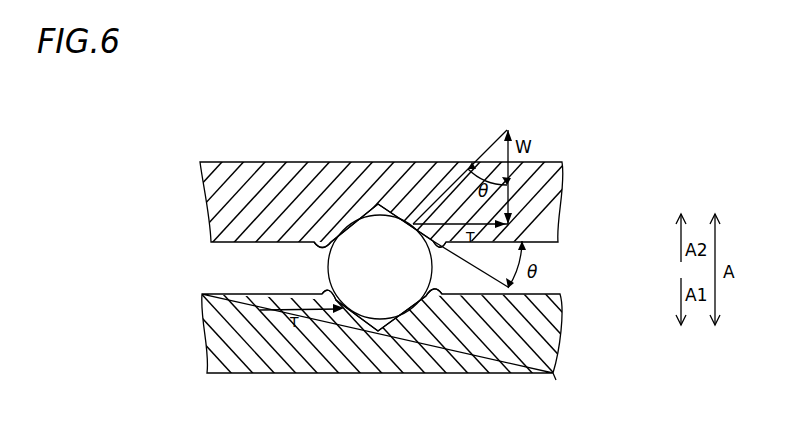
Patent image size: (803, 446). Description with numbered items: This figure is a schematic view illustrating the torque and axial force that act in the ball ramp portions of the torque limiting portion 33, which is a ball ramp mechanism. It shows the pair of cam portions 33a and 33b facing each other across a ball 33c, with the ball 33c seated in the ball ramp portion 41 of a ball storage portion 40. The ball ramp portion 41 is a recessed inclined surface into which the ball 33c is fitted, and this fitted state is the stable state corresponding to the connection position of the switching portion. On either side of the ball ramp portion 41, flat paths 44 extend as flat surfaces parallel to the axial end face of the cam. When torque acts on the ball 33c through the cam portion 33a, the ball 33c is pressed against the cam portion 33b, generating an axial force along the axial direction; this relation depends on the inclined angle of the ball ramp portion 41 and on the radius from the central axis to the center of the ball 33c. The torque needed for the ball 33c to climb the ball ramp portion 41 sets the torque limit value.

The torque limiting portion 33 is at (214, 134).
The cam portion 33a is at (270, 358).
The cam portion 33b is at (252, 175).
The ball 33c is at (375, 237).
The ball storage portion 40 is at (216, 267).
The ball ramp portion 41 is at (307, 240).
The flat path 44 is at (243, 243).